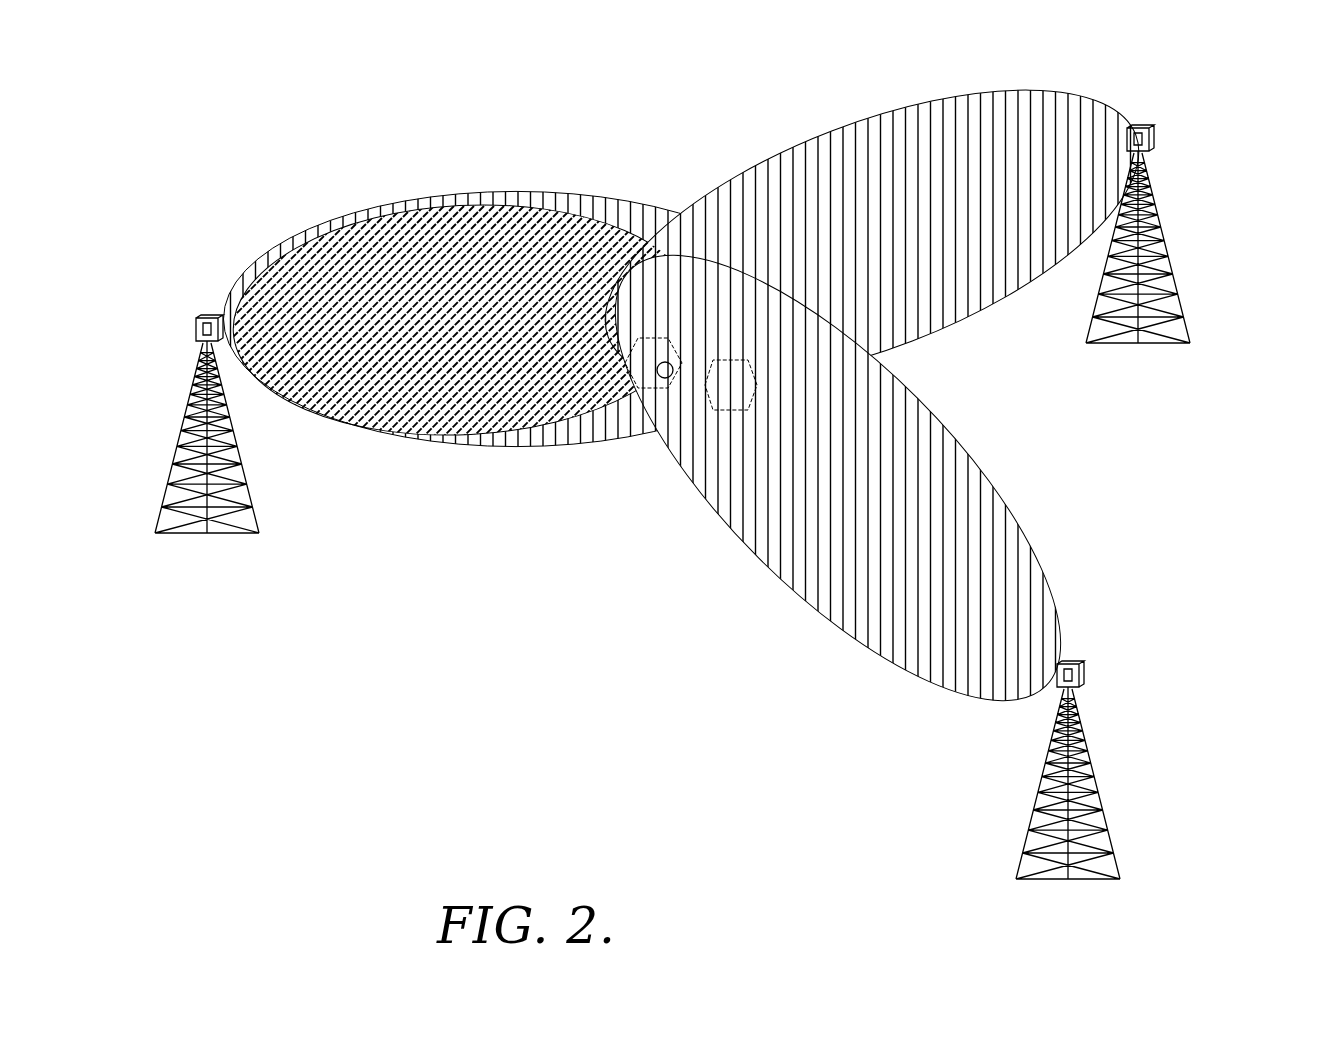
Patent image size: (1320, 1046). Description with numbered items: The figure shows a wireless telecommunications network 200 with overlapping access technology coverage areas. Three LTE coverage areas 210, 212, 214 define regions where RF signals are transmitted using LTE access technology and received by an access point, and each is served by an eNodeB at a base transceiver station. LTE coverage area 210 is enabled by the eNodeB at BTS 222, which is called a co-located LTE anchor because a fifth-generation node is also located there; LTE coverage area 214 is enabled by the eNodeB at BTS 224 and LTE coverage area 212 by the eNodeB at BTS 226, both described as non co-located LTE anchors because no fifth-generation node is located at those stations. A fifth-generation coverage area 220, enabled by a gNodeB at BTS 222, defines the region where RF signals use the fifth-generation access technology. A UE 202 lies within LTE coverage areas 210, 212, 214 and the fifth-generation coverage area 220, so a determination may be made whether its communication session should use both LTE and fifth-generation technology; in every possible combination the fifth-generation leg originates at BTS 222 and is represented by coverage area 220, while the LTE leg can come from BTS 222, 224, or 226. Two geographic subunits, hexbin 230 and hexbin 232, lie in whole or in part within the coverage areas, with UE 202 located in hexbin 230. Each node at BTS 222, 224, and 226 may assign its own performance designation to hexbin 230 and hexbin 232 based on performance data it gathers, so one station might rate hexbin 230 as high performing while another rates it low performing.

The wireless telecommunications network 200 is at (378, 88).
The UE 202 is at (668, 376).
The LTE coverage area 210 is at (530, 193).
The LTE coverage area 212 is at (1012, 94).
The LTE coverage area 214 is at (993, 488).
The 5G coverage area 220 is at (391, 218).
The BTS 222 is at (208, 315).
The BTS 224 is at (1079, 666).
The BTS 226 is at (1148, 127).
The hexbin 230 is at (713, 406).
The hexbin 232 is at (632, 378).